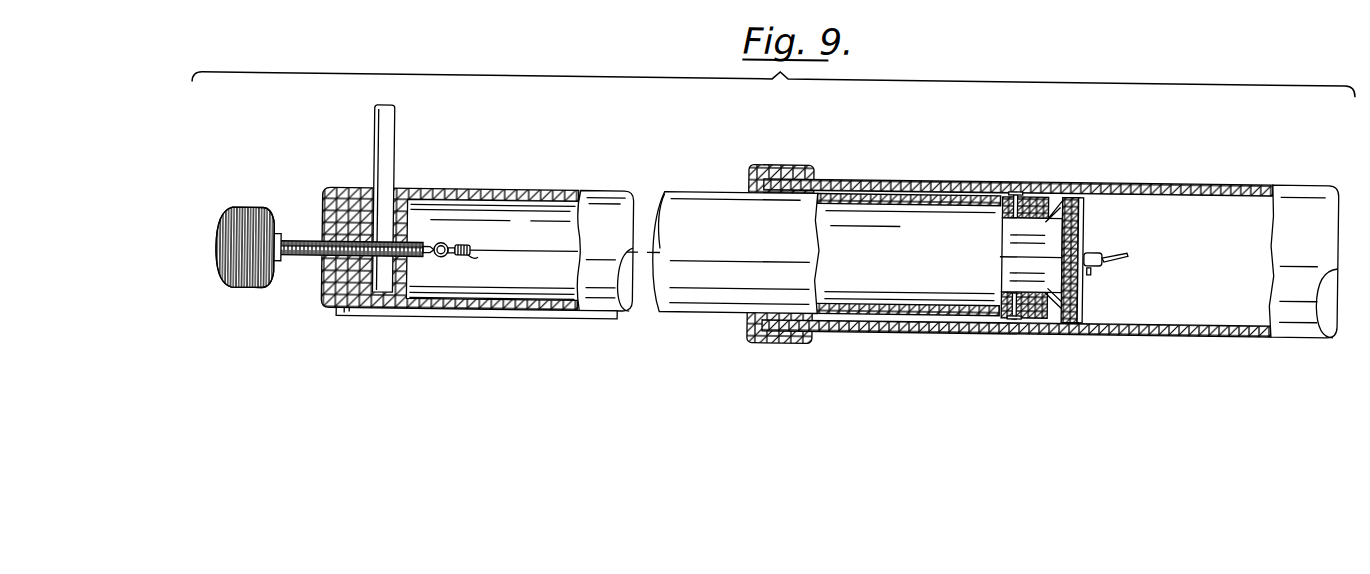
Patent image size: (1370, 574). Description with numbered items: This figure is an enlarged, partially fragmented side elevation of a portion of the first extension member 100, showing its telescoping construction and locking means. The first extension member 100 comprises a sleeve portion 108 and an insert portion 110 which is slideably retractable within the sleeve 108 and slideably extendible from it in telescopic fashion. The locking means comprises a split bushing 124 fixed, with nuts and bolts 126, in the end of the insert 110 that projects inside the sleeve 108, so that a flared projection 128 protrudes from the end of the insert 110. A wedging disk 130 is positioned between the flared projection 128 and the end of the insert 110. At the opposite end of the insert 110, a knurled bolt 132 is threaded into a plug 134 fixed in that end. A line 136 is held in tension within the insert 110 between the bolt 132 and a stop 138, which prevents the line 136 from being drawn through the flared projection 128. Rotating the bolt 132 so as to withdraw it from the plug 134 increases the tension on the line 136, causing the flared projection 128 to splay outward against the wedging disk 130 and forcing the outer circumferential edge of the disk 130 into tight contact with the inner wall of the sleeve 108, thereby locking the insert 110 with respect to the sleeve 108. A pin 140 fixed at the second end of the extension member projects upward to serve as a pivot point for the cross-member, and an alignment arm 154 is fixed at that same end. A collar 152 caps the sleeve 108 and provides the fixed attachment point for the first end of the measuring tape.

The first extension member 100 is at (1195, 171).
The sleeve portion 108 is at (900, 179).
The insert portion 110 is at (612, 195).
The split bushing 124 is at (1035, 193).
The nuts and bolts 126 is at (1012, 189).
The flared projection 128 is at (1085, 250).
The wedging disk 130 is at (1072, 193).
The knurled bolt 132 is at (223, 225).
The plug 134 is at (325, 287).
The line 136 is at (523, 254).
The stop 138 is at (1103, 263).
The pin 140 is at (390, 153).
The collar 152 is at (793, 166).
The alignment arm 154 is at (482, 322).